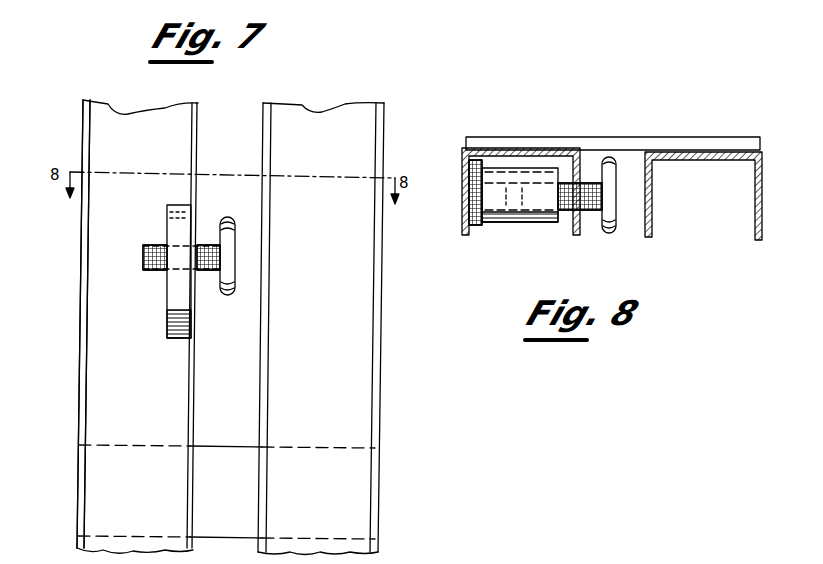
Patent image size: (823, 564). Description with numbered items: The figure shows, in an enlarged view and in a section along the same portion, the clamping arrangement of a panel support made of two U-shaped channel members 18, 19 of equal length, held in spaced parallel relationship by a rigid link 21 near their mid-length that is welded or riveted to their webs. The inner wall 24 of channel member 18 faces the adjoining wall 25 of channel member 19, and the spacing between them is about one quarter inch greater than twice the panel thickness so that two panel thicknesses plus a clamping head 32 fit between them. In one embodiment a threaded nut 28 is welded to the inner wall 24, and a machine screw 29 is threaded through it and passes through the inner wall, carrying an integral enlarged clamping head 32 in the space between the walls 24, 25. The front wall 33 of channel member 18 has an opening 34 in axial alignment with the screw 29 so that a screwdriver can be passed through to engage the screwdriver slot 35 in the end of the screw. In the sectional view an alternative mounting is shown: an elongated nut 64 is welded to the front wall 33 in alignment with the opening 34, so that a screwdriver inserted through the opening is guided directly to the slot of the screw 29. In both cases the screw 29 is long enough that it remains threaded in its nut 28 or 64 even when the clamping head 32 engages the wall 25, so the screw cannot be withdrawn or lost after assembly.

In FIG. 7, the U-shaped channel member 18 is at (72, 388).
In FIG. 7, the U-shaped channel member 19 is at (384, 358).
In FIG. 7, the link 21 is at (225, 446).
In FIG. 8, the link 21 is at (643, 138).
In FIG. 7, the inner wall 24 is at (189, 388).
In FIG. 7, the adjoining wall 25 is at (267, 343).
In FIG. 8, the adjoining wall 25 is at (648, 208).
In FIG. 7, the threaded nut 28 is at (170, 205).
In FIG. 7, the machine screw 29 is at (156, 269).
In FIG. 8, the machine screw 29 is at (592, 212).
In FIG. 7, the clamping head 32 is at (226, 292).
In FIG. 8, the clamping head 32 is at (612, 234).
In FIG. 7, the front wall 33 is at (80, 337).
In FIG. 8, the front wall 33 is at (462, 236).
In FIG. 7, the opening 34 is at (83, 263).
In FIG. 8, the opening 34 is at (468, 190).
In FIG. 7, the screwdriver slot 35 is at (143, 260).
In FIG. 8, the elongated nut 64 is at (504, 222).